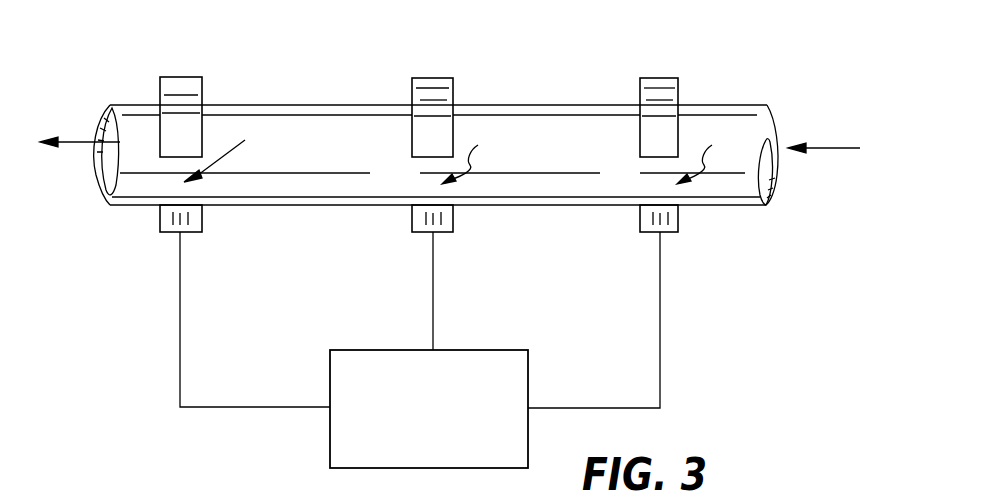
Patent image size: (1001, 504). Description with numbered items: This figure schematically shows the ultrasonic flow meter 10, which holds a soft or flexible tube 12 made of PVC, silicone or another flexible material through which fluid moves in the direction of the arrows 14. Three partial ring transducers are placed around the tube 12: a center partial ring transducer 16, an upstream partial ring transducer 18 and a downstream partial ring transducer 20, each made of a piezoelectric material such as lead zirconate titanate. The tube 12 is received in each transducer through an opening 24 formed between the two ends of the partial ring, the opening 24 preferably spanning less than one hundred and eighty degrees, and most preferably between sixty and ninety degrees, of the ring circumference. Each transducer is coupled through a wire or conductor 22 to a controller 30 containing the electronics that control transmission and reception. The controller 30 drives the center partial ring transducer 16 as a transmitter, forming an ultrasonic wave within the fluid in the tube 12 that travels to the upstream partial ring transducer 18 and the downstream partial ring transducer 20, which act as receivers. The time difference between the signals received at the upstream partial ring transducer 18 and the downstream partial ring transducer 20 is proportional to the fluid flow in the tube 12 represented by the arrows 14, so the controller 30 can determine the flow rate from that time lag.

The ultrasonic flow meter 10 is at (330, 84).
The tube 12 is at (548, 105).
The arrows 14 is at (73, 142).
The center partial ring transducer 16 is at (452, 78).
The upstream partial ring transducer 18 is at (202, 77).
The downstream partial ring transducer 20 is at (668, 78).
The wire 22 is at (180, 323).
The opening 24 is at (464, 157).
The controller 30 is at (502, 350).